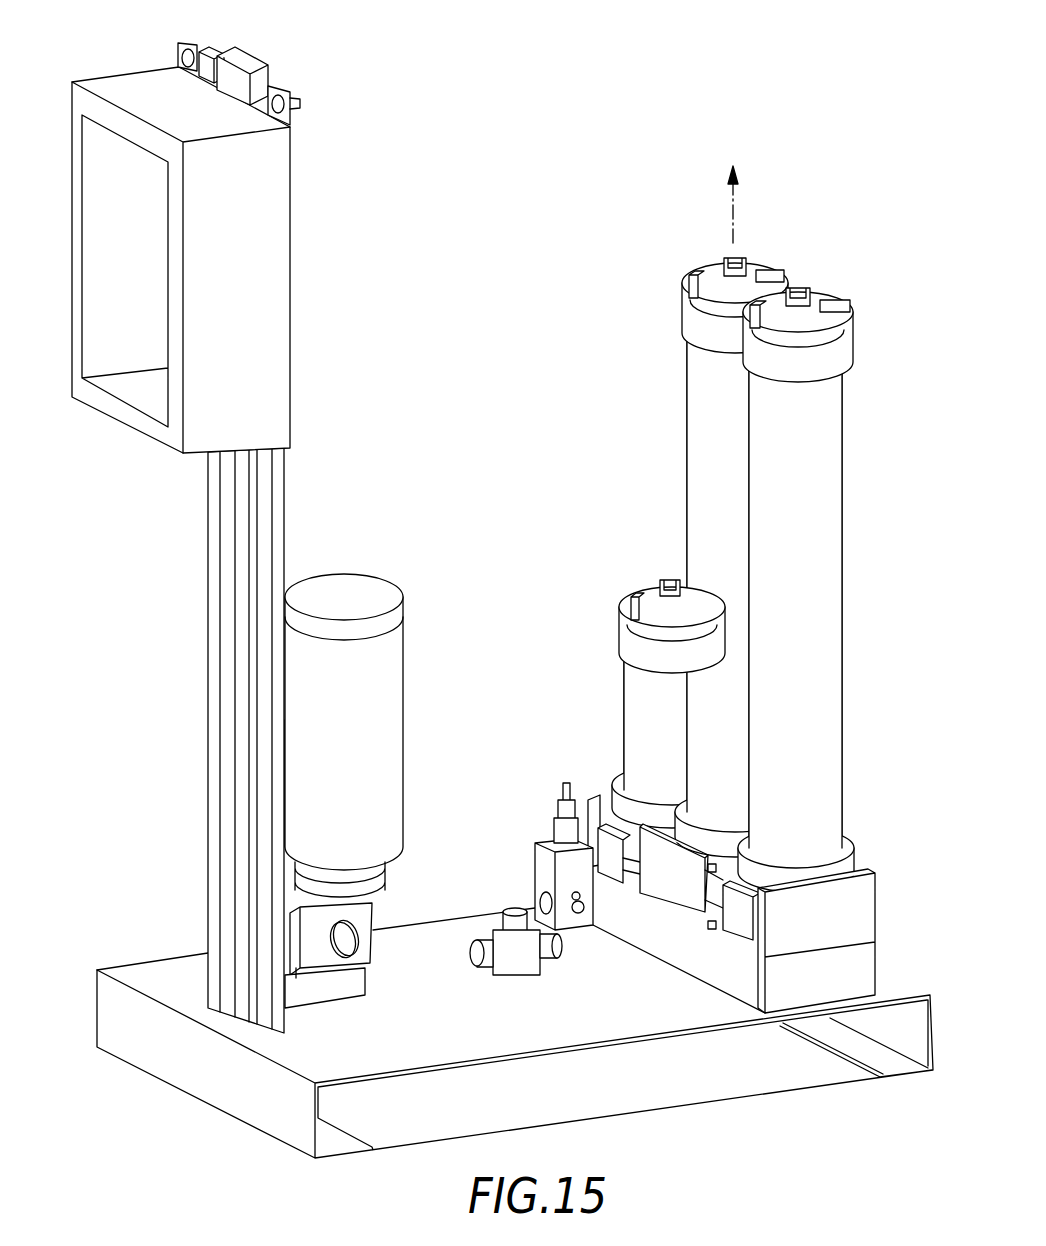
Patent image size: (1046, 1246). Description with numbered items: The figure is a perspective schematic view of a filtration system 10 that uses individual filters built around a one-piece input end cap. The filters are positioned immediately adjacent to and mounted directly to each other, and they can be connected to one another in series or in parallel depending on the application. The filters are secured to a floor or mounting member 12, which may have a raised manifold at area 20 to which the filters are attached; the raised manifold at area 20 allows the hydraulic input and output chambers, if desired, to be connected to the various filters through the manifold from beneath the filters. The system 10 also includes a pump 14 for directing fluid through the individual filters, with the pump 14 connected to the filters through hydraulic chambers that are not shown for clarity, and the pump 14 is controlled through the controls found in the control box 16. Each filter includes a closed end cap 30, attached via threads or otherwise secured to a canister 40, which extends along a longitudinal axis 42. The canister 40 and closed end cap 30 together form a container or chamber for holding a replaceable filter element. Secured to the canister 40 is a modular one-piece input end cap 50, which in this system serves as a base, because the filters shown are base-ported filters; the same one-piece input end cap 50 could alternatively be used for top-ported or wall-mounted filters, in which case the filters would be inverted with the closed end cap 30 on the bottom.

The filtration system 10 is at (502, 593).
The mounting member 12 is at (528, 1055).
The pump 14 is at (358, 582).
The control box 16 is at (122, 82).
The raised manifold area 20 is at (747, 988).
The closed end cap 30 is at (680, 292).
The canister 40 is at (636, 740).
The longitudinal axis 42 is at (738, 214).
The one-piece input end cap 50 is at (860, 906).